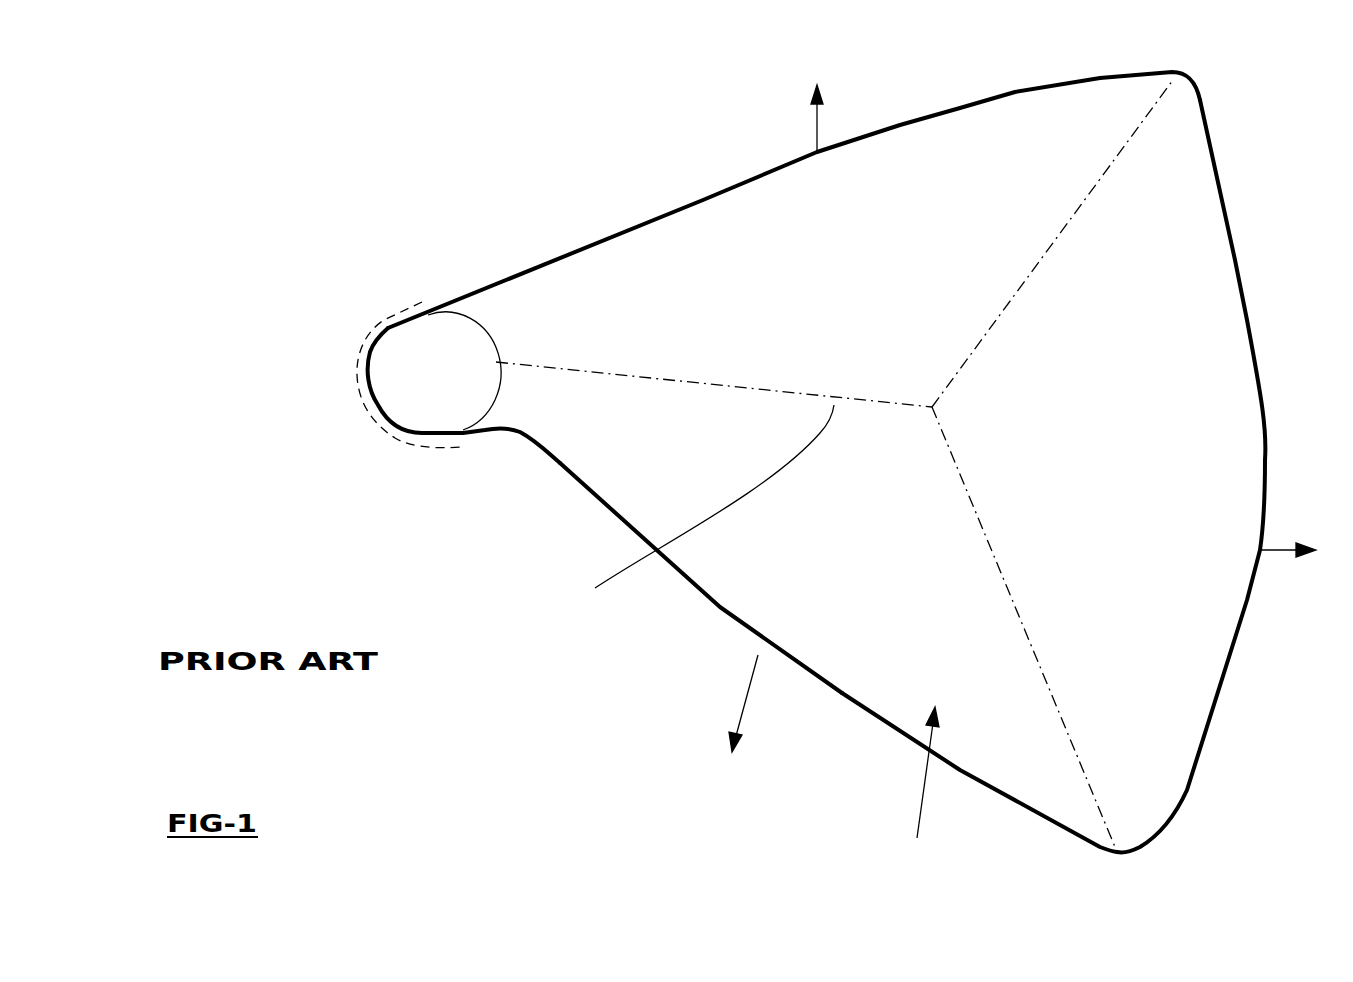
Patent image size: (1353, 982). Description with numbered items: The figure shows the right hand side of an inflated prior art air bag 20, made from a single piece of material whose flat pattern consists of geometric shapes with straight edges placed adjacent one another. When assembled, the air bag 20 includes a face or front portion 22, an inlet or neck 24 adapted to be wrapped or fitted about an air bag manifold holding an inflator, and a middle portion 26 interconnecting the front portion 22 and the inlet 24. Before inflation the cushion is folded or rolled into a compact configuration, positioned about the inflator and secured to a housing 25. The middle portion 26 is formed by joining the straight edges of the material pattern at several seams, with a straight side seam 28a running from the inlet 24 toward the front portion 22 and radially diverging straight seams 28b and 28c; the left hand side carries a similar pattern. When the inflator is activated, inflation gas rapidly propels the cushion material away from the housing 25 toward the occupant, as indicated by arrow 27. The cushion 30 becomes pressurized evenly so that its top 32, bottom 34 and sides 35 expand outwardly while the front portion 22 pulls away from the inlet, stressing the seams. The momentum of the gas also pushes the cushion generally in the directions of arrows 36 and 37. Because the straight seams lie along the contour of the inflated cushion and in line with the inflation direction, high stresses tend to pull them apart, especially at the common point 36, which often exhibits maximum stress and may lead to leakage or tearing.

The air bag 20 is at (640, 110).
The front portion 22 is at (1222, 318).
The inlet 24 is at (524, 420).
The housing 25 is at (392, 318).
The middle portion 26 is at (735, 592).
The arrow 27 is at (1276, 548).
The side seam 28a is at (747, 388).
The seam 28b is at (1023, 277).
The seam 28c is at (1023, 615).
The cushion 30 is at (916, 797).
The top 32 is at (1013, 137).
The bottom 34 is at (852, 675).
The sides 35 is at (697, 505).
The common point 36 is at (966, 413).
The arrow 37 is at (722, 715).